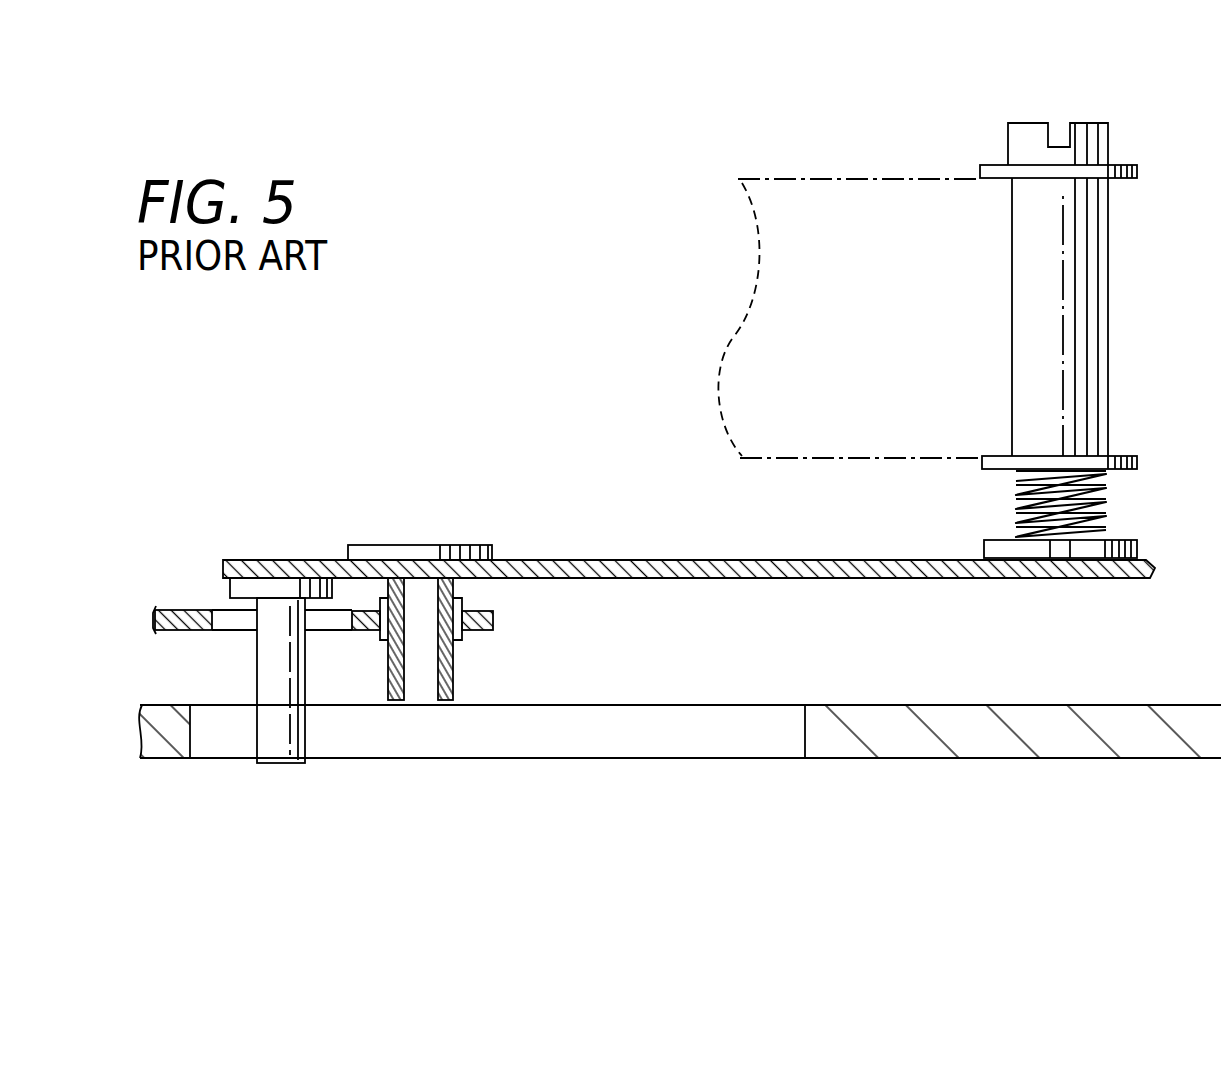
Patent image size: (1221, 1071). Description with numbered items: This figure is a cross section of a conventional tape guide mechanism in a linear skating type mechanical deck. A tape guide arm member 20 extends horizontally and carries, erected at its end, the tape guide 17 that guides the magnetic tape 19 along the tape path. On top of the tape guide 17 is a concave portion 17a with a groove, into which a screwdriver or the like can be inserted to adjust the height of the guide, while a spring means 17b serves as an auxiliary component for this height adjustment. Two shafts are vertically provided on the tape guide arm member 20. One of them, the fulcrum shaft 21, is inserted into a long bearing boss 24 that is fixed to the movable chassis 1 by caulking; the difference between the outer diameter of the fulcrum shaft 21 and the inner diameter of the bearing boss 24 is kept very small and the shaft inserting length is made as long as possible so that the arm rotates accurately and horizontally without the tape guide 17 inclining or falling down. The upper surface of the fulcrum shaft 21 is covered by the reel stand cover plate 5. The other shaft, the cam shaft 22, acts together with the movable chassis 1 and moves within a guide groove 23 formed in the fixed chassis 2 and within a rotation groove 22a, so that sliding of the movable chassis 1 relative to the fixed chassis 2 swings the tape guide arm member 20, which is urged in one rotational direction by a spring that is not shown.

The movable chassis 1 is at (178, 606).
The fixed chassis 2 is at (888, 742).
The reel stand cover plate 5 is at (450, 560).
The tape guide 17 is at (1100, 330).
The concave portion with a groove 17a is at (1092, 122).
The spring means 17b is at (1110, 490).
The magnetic tape 19 is at (870, 178).
The tape guide arm member 20 is at (612, 560).
The fulcrum shaft 21 is at (416, 692).
The cam shaft 22 is at (276, 752).
The rotation groove 22a is at (216, 605).
The guide groove 23 is at (656, 742).
The bearing boss 24 is at (454, 668).